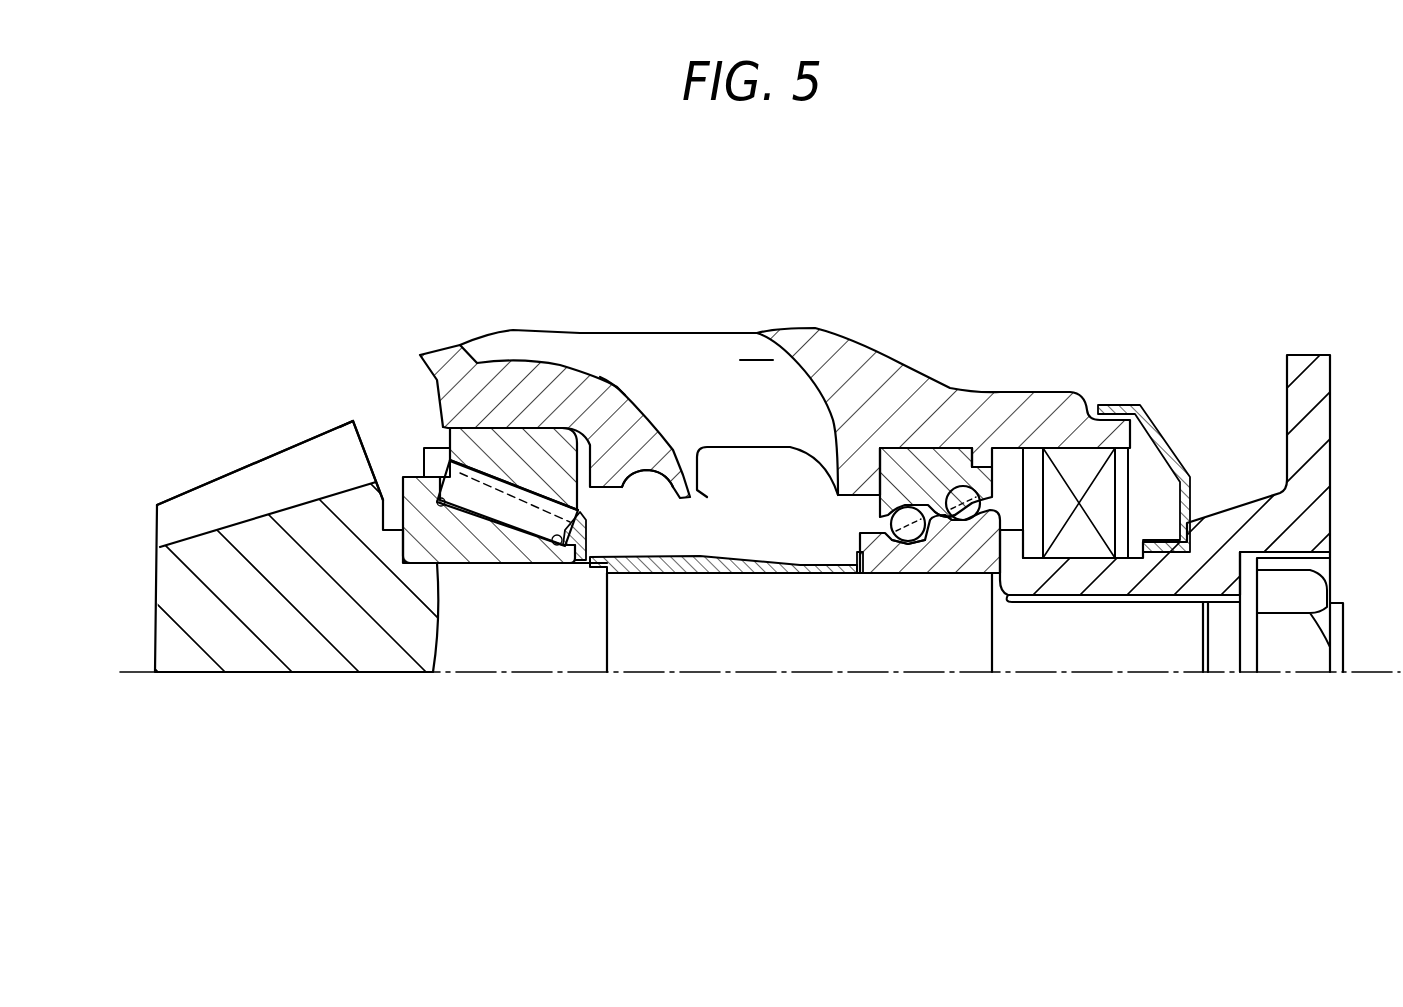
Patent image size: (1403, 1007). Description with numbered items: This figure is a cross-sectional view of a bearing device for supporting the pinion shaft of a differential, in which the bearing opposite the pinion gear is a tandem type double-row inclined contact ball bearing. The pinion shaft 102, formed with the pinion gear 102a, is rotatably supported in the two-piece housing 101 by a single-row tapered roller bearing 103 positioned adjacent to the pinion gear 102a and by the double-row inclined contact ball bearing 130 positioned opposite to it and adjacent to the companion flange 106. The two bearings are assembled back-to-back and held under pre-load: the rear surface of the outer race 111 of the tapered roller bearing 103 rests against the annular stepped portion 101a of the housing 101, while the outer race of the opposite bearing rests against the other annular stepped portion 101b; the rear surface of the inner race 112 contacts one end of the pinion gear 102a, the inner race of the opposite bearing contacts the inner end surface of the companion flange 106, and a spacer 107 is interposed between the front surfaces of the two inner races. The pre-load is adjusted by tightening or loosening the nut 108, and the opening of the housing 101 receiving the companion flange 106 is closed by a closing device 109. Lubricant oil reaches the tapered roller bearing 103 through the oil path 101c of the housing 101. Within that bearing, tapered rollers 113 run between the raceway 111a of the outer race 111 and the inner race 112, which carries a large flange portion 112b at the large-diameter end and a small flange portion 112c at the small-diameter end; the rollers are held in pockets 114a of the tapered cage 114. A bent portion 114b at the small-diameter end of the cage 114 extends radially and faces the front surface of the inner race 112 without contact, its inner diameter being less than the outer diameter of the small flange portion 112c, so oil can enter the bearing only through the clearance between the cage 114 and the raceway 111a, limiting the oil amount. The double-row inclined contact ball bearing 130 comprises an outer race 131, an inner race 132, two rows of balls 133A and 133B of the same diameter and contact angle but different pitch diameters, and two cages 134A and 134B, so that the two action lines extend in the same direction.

The housing 101 is at (857, 320).
The annular stepped portion 101a is at (598, 478).
The annular stepped portion 101b is at (855, 483).
The oil path 101c is at (740, 355).
The pinion shaft 102 is at (762, 657).
The pinion gear 102a is at (223, 497).
The single-row tapered roller bearing 103 is at (452, 600).
The companion flange 106 is at (1213, 532).
The spacer 107 is at (747, 557).
The nut 108 is at (1313, 587).
The closing device 109 is at (1103, 493).
The outer race 111 is at (535, 440).
The raceway 111a is at (613, 385).
The inner race 112 is at (485, 565).
The large flange portion 112b is at (350, 443).
The small flange portion 112c is at (543, 565).
The tapered rollers 113 is at (422, 462).
The cage 114 is at (435, 446).
The pockets 114a is at (478, 458).
The bent portion 114b is at (585, 525).
The tandem type double-row inclined contact ball bearing 130 is at (972, 523).
The outer race 131 is at (922, 465).
The inner race 132 is at (963, 573).
The row of balls 133A is at (955, 477).
The row of balls 133B is at (925, 545).
The cage 134A is at (975, 490).
The cage 134B is at (880, 540).